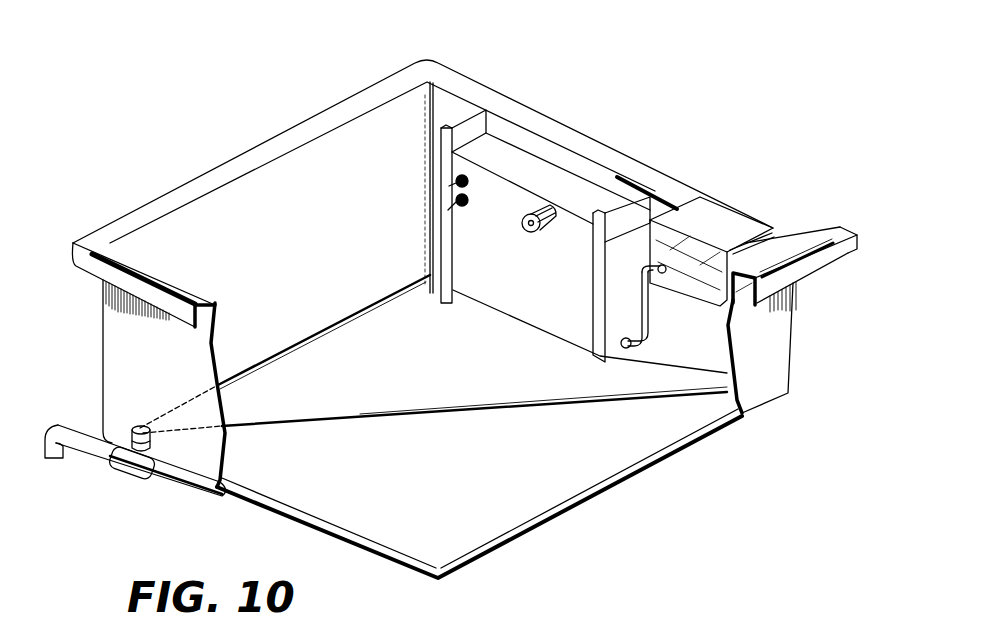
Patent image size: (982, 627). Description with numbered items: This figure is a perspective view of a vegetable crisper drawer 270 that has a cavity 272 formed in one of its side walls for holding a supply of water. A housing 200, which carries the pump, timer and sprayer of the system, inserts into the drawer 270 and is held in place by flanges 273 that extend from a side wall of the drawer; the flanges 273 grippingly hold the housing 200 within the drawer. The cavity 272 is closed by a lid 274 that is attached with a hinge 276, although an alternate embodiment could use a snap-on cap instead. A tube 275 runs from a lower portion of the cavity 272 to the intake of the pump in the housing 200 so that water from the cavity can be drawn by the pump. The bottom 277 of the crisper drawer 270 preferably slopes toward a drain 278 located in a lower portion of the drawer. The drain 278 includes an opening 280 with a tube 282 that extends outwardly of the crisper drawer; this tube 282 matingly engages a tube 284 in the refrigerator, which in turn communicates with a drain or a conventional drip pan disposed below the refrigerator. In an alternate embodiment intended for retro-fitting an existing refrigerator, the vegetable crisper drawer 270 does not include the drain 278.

The housing 200 is at (525, 170).
The vegetable crisper drawer 270 is at (762, 378).
The cavity 272 is at (714, 222).
The flanges 273 is at (478, 117).
The lid 274 is at (780, 242).
The tube 275 is at (650, 310).
The hinge 276 is at (758, 237).
The bottom 277 is at (472, 504).
The drain 278 is at (162, 488).
The opening 280 is at (140, 426).
The tube 282 is at (114, 482).
The tube 284 is at (52, 452).